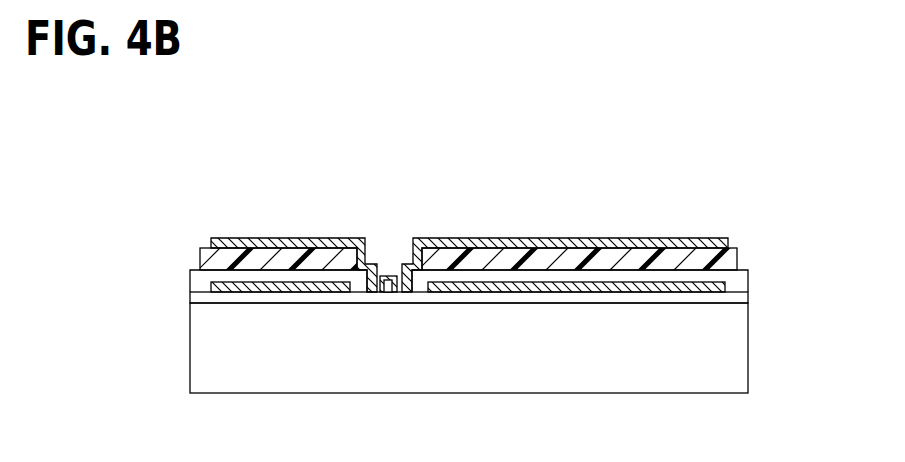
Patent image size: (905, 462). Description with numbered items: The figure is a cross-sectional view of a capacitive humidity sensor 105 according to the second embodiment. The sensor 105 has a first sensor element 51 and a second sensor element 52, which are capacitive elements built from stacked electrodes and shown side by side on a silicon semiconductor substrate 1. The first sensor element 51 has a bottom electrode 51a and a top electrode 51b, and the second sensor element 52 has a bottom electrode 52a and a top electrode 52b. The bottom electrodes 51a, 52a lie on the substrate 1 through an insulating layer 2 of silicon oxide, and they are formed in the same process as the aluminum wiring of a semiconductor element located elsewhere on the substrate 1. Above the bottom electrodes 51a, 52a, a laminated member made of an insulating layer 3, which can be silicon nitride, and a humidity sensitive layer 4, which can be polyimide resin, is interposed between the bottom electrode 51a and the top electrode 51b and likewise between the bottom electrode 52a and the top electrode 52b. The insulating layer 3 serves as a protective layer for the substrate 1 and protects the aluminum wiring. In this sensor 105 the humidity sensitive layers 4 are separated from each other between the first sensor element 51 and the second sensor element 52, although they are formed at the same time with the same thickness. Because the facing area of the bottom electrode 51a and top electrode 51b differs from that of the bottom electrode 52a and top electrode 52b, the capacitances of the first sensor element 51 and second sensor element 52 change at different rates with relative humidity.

The capacitive humidity sensor 105 is at (190, 202).
The silicon semiconductor substrate 1 is at (732, 350).
The insulating layer 2 is at (740, 297).
The insulating layer 3 is at (738, 282).
The humidity sensitive layer 4 is at (725, 257).
The first sensor element 51 is at (358, 165).
The second sensor element 52 is at (732, 165).
The bottom electrode 51a is at (292, 286).
The top electrode 51b is at (285, 247).
The bottom electrode 52a is at (575, 290).
The top electrode 52b is at (572, 247).